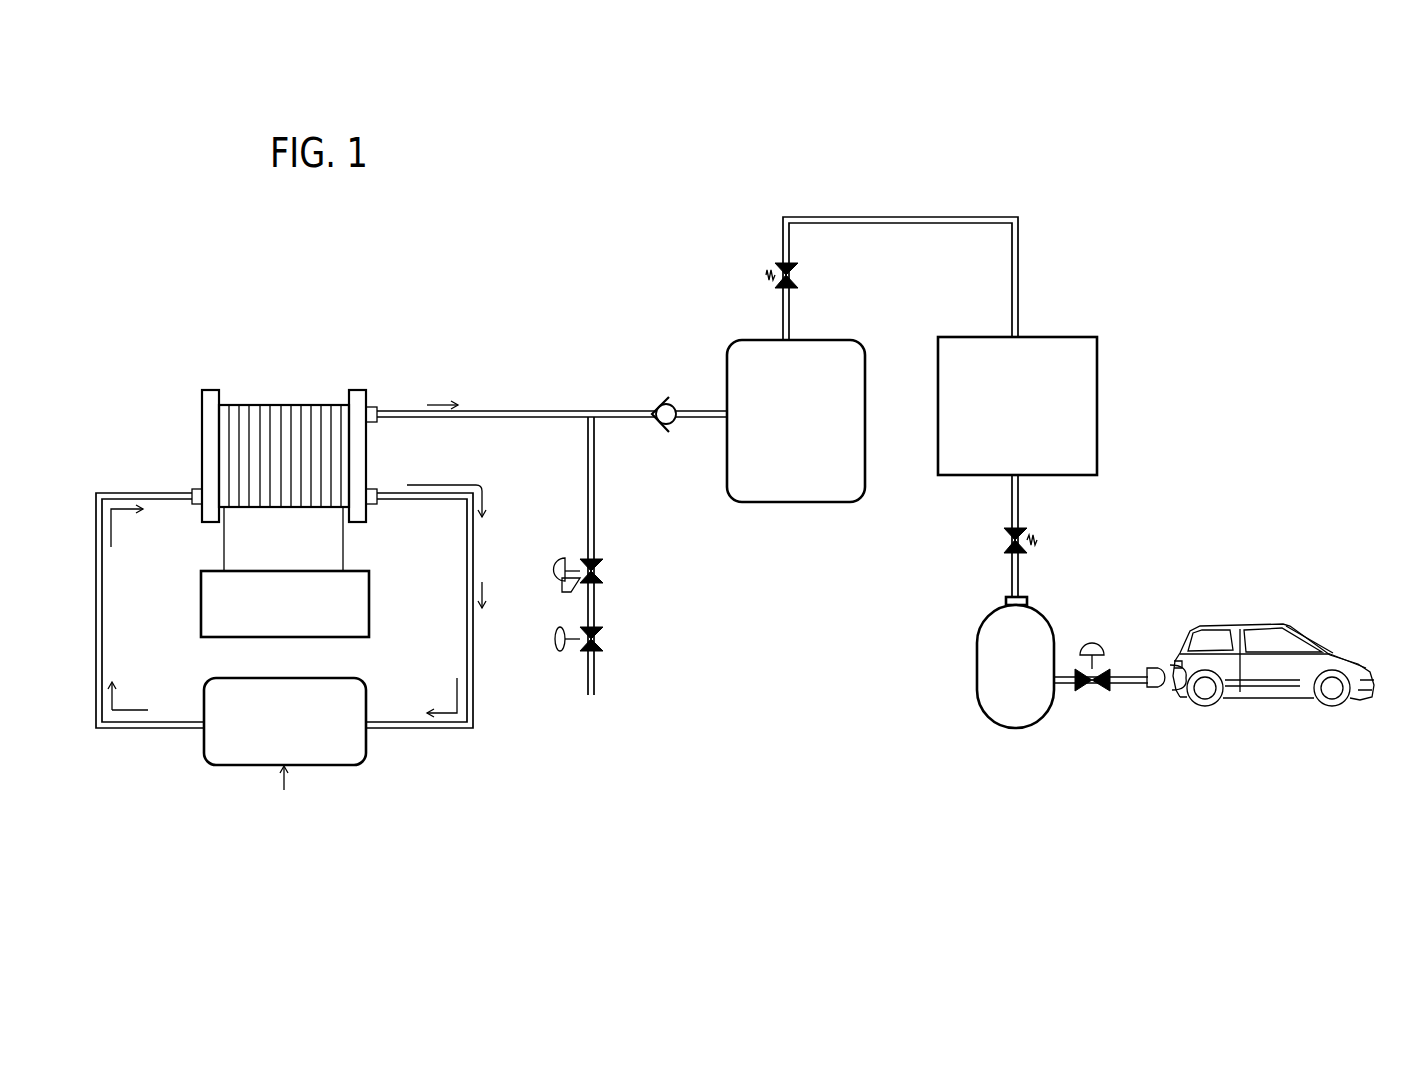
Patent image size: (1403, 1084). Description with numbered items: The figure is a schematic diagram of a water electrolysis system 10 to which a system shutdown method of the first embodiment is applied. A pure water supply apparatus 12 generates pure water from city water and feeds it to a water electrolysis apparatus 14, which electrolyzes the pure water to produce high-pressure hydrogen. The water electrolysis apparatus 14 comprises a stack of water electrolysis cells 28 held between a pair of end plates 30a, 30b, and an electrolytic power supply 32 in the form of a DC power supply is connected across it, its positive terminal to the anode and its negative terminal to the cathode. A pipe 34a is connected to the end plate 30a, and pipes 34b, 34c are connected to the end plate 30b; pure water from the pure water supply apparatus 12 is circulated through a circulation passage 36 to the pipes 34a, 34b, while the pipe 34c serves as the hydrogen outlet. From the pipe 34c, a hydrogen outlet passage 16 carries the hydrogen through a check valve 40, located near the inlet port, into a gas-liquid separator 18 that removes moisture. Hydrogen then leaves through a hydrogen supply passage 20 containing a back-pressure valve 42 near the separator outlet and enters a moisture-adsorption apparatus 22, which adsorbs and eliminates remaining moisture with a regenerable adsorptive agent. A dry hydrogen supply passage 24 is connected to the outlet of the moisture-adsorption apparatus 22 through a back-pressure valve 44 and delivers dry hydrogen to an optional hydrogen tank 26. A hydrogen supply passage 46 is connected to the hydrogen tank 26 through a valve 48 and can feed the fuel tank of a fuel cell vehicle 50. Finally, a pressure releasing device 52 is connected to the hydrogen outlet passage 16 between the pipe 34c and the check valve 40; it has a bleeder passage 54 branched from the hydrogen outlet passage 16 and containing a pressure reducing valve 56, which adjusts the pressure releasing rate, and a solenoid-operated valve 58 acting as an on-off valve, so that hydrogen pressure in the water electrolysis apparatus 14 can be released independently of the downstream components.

The water electrolysis system 10 is at (345, 220).
The pure water supply apparatus 12 is at (366, 747).
The water electrolysis apparatus 14 is at (283, 447).
The hydrogen outlet passage 16 is at (525, 408).
The gas-liquid separator 18 is at (866, 343).
The hydrogen supply passage 20 is at (870, 217).
The moisture-adsorption apparatus 22 is at (1037, 333).
The dry hydrogen supply passage 24 is at (1021, 573).
The hydrogen tank 26 is at (977, 666).
The water electrolysis cells 28 is at (284, 477).
The end plate 30a is at (201, 451).
The end plate 30b is at (366, 452).
The electrolytic power supply 32 is at (302, 571).
The pipe 34a is at (196, 505).
The pipe 34b is at (373, 505).
The pipe 34c is at (383, 391).
The circulation passage 36 is at (103, 626).
The check valve 40 is at (657, 403).
The back-pressure valve 42 is at (799, 276).
The back-pressure valve 44 is at (1003, 539).
The hydrogen supply passage 46 is at (1134, 668).
The valve 48 is at (1091, 638).
The fuel cell vehicle 50 is at (1239, 620).
The pressure releasing device 52 is at (625, 556).
The bleeder passage 54 is at (597, 531).
The pressure reducing valve 56 is at (603, 571).
The solenoid-operated valve 58 is at (603, 640).